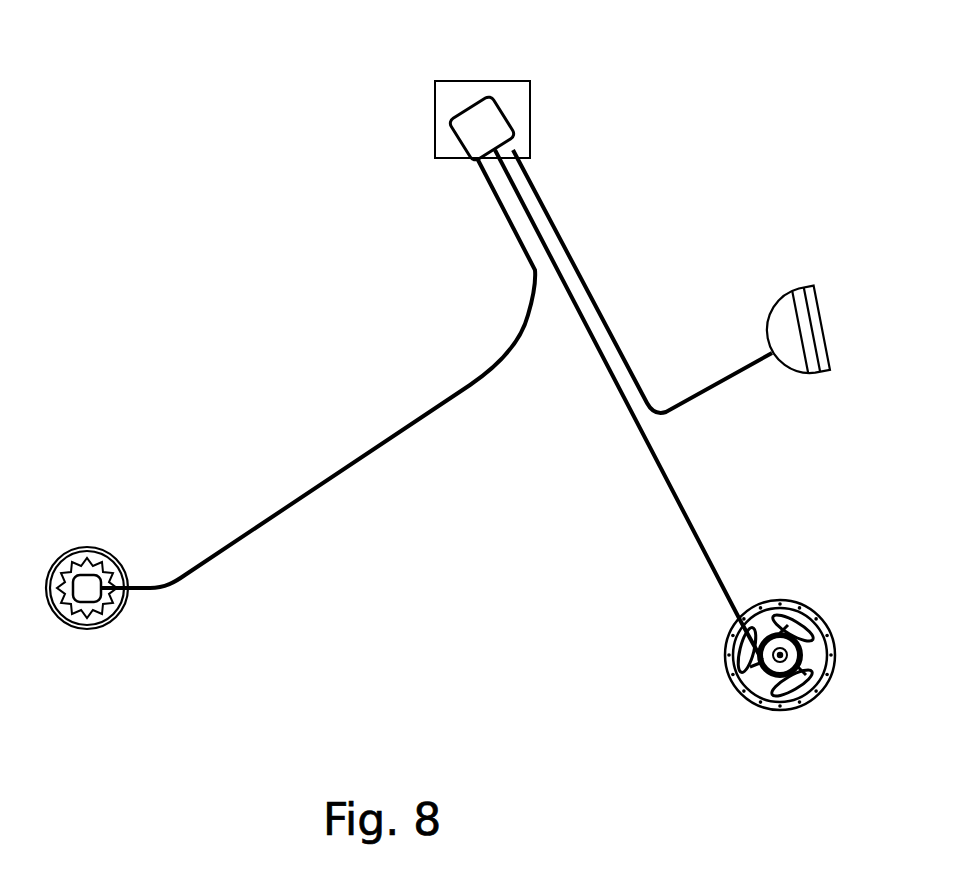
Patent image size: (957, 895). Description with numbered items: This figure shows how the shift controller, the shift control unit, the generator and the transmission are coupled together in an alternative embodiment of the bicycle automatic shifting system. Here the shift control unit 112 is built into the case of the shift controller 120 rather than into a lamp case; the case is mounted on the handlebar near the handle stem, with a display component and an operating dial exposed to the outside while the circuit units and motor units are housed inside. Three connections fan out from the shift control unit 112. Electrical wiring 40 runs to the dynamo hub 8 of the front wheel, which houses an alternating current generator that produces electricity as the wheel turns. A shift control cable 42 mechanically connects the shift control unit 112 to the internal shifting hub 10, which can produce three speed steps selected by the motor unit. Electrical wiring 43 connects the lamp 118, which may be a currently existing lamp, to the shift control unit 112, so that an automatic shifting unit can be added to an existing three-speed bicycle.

The dynamo hub 8 is at (773, 603).
The internal shifting hub 10 is at (110, 620).
The electrical wiring 40 is at (685, 507).
The shift control cable 42 is at (403, 427).
The electrical wiring 43 is at (627, 358).
The shift control unit 112 is at (510, 108).
The lamp 118 is at (790, 305).
The shift controller 120 is at (532, 128).